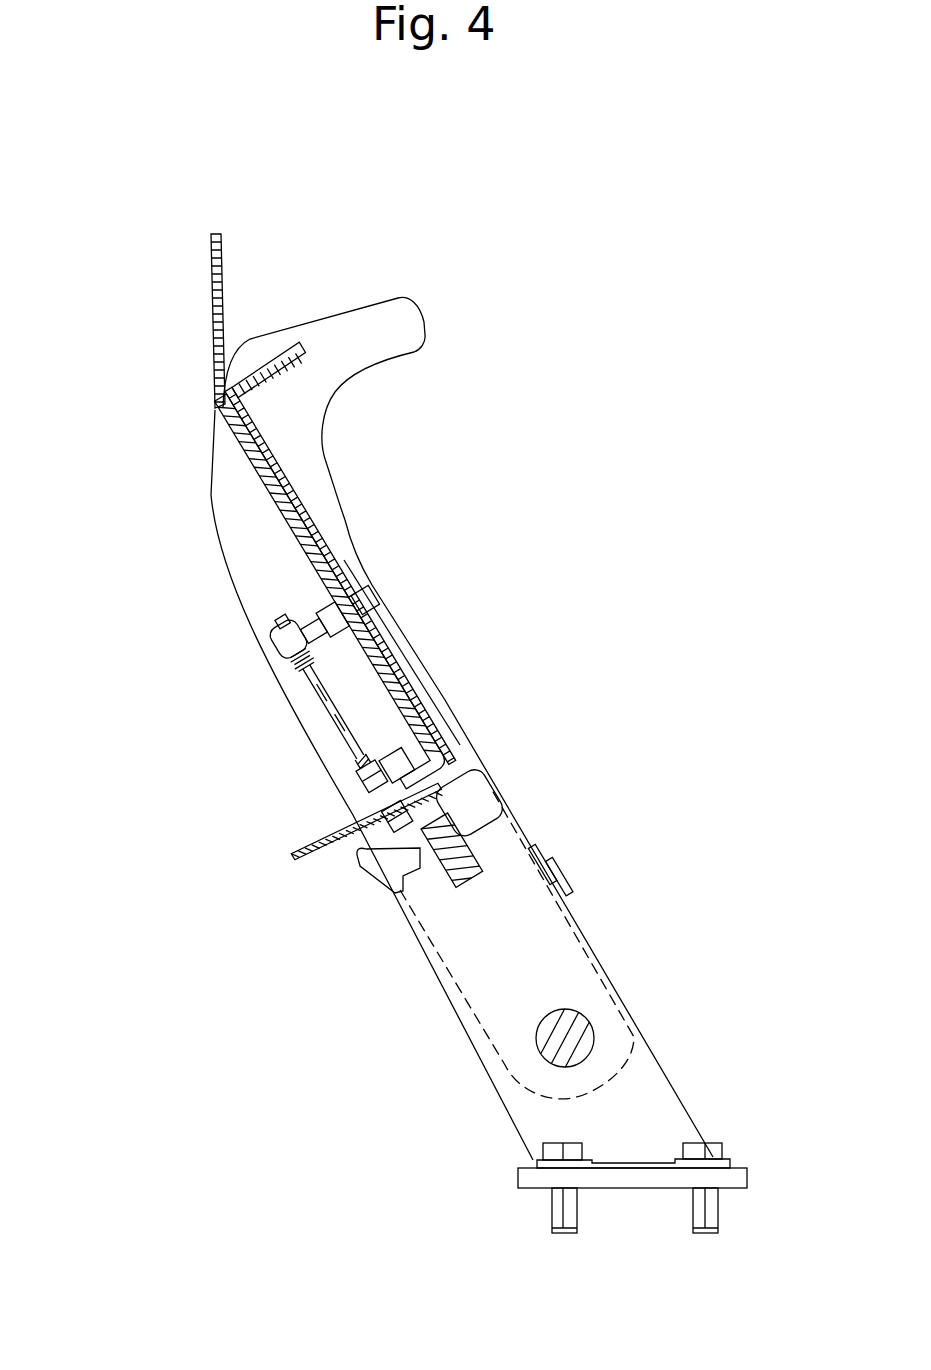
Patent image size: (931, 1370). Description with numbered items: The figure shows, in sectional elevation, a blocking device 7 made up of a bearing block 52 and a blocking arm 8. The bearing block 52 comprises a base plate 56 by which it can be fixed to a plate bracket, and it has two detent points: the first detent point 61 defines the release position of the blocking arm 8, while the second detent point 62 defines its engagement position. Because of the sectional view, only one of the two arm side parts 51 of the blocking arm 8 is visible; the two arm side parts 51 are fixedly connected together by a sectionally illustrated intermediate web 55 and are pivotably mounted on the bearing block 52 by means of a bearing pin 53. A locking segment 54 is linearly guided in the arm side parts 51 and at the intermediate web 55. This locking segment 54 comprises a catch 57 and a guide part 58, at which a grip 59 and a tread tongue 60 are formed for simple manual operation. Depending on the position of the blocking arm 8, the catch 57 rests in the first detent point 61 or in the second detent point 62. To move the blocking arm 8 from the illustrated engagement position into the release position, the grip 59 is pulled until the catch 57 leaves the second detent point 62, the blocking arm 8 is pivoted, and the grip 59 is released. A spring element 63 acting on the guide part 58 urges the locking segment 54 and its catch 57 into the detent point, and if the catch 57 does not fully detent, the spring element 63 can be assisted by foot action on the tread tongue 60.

The blocking device 7 is at (615, 820).
The blocking arm 8 is at (387, 538).
The arm side part 51 is at (248, 543).
The bearing block 52 is at (630, 1083).
The bearing pin 53 is at (565, 1028).
The locking segment 54 is at (335, 803).
The intermediate web 55 is at (284, 487).
The base plate 56 is at (627, 1175).
The catch 57 is at (500, 812).
The guide part 58 is at (420, 717).
The grip 59 is at (220, 238).
The tread tongue 60 is at (297, 860).
The first detent point 61 is at (400, 905).
The second detent point 62 is at (468, 905).
The spring element 63 is at (303, 650).